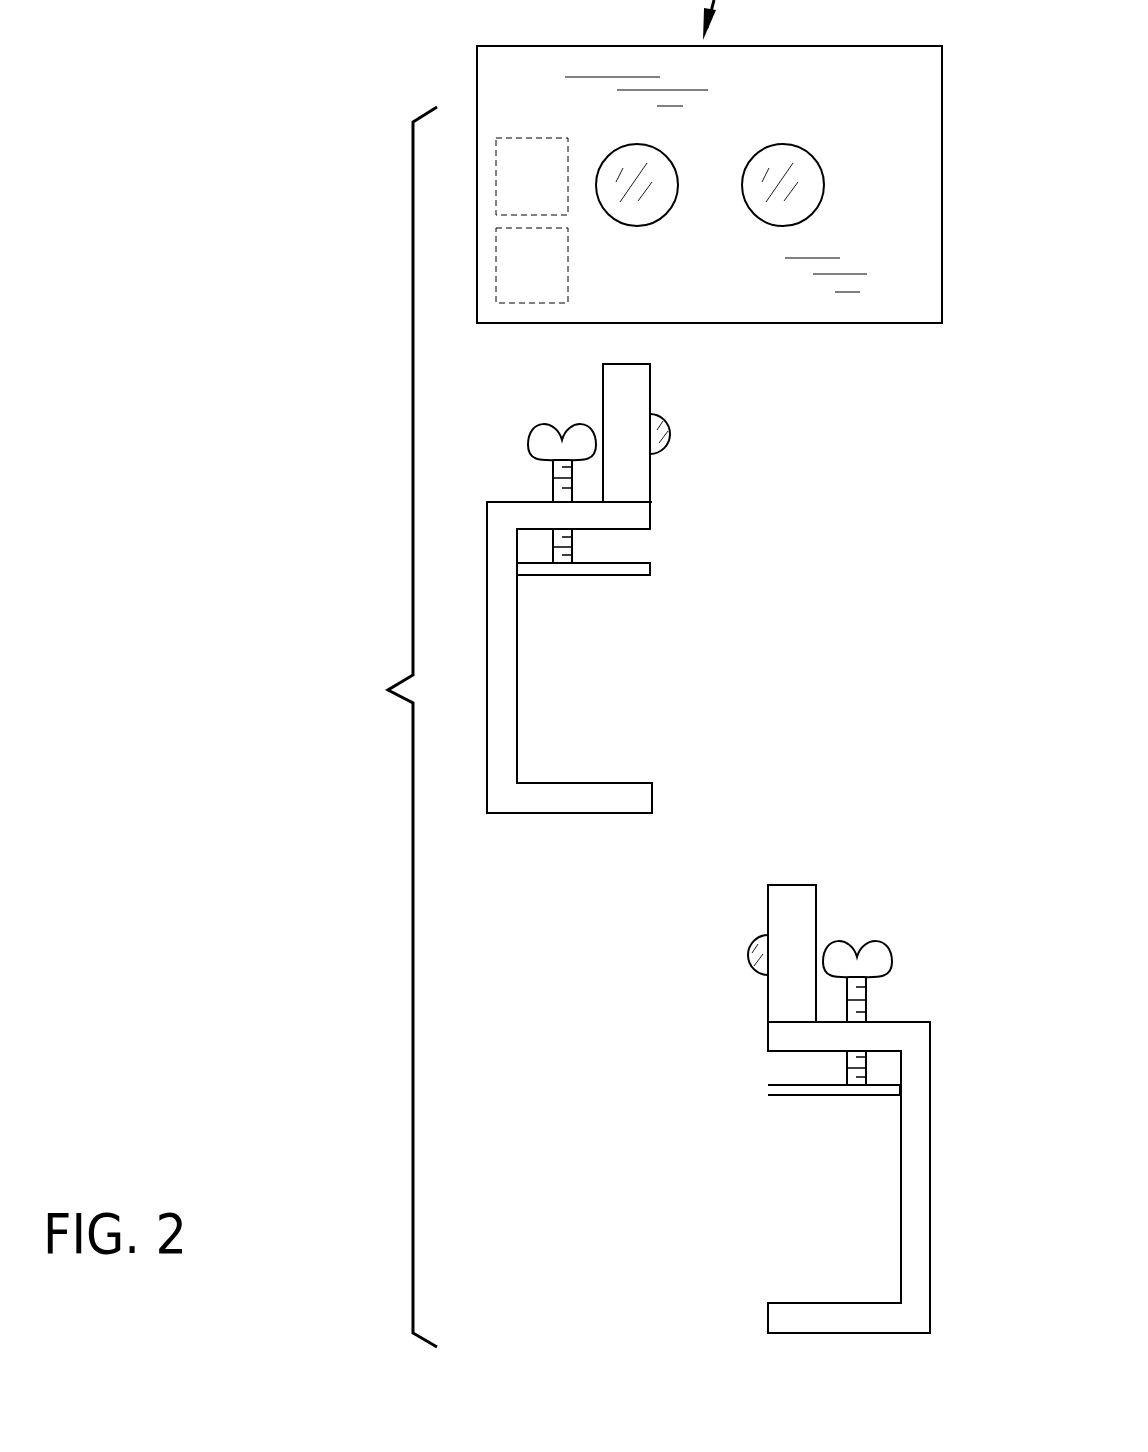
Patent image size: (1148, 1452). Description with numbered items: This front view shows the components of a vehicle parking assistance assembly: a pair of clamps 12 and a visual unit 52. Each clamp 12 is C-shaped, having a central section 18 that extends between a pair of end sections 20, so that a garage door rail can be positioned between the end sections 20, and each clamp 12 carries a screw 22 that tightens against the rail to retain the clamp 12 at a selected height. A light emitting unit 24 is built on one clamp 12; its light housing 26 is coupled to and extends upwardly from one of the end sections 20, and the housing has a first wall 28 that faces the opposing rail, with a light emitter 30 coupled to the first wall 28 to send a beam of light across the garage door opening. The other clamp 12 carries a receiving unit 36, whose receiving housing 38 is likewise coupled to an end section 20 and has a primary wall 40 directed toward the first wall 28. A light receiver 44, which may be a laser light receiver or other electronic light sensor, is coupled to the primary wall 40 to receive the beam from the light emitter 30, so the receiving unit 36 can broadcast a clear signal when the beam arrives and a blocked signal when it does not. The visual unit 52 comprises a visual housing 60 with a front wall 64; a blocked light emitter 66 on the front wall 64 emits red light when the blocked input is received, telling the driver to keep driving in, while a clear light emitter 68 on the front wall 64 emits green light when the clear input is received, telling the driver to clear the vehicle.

The clamp 12 is at (674, 544).
The central section 18 is at (518, 712).
The end section 20 is at (501, 503).
The screw 22 is at (590, 438).
The light emitting unit 24 is at (679, 625).
The light housing 26 is at (607, 374).
The first wall 28 is at (652, 392).
The light emitter 30 is at (670, 430).
The receiving unit 36 is at (804, 1089).
The receiving housing 38 is at (770, 885).
The primary wall 40 is at (772, 911).
The light receiver 44 is at (755, 965).
The visual unit 52 is at (742, 20).
The visual housing 60 is at (513, 48).
The front wall 64 is at (906, 56).
The blocked light emitter 66 is at (637, 145).
The clear light emitter 68 is at (790, 212).